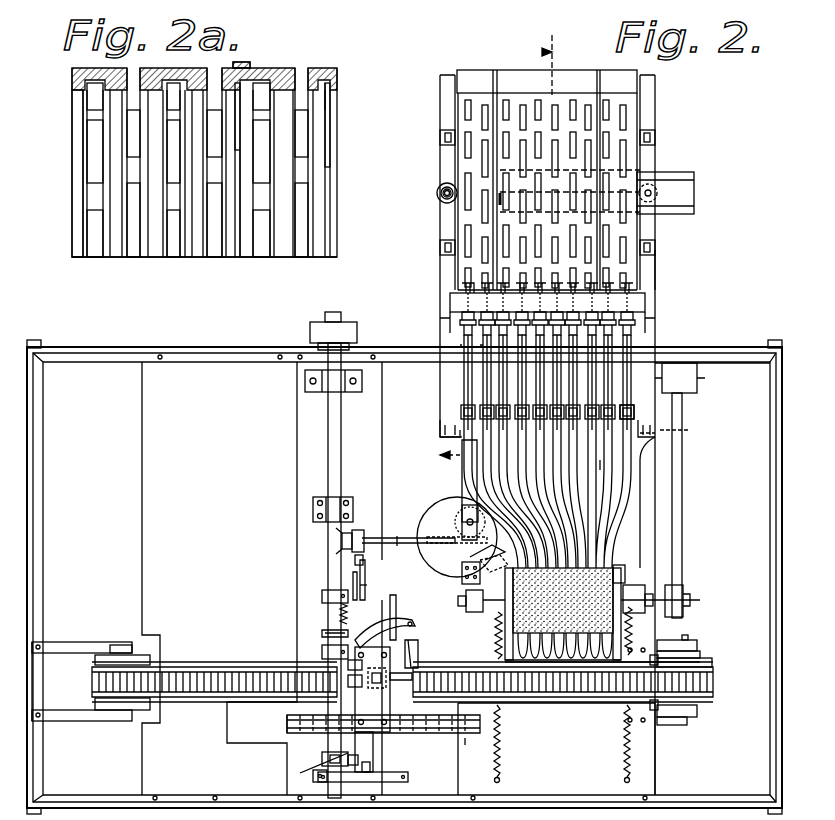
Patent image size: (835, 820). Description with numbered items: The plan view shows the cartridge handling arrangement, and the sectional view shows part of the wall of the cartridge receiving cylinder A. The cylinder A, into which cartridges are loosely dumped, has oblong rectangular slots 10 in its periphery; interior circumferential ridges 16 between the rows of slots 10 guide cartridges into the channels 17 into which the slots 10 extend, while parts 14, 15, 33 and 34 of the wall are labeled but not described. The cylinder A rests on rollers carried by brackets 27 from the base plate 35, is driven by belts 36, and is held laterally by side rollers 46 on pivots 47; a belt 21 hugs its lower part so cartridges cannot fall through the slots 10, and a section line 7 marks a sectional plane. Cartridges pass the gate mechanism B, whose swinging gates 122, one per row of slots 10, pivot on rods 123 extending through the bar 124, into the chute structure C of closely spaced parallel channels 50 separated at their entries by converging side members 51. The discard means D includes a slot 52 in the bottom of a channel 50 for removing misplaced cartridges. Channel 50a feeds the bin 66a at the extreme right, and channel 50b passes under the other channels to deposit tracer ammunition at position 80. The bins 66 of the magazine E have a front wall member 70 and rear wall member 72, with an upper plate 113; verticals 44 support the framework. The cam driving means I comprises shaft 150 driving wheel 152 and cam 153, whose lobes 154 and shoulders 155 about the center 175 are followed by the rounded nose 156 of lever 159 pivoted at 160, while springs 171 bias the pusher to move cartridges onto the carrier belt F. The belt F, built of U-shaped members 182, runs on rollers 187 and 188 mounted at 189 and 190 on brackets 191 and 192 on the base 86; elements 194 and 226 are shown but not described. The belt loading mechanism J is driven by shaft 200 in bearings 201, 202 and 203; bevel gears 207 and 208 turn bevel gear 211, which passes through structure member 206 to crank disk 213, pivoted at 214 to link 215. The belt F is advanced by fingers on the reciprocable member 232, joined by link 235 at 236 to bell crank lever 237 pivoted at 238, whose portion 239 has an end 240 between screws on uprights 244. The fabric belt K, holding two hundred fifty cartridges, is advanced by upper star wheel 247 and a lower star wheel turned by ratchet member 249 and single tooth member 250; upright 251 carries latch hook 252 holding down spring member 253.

In FIG. 2, the section line 7 is at (491, 247).
In FIG. 2, the belt 21 is at (503, 54).
In FIG. 2A, the belts 36 is at (242, 64).
In FIG. 2, the belts 36 is at (498, 97).
In FIG. 2A, the openings or slots 10 is at (92, 150).
In FIG. 2, the openings or slots 10 is at (468, 148).
In FIG. 2, the brackets 27 is at (440, 135).
In FIG. 2A, the main rotating cylinder A is at (337, 70).
In FIG. 2, the main rotating cylinder A is at (655, 158).
In FIG. 2, the side rollers 46 is at (437, 190).
In FIG. 2, the pivots 47 is at (437, 198).
In FIG. 2, the base plate 35 is at (655, 262).
In FIG. 2, the swinging gates 122 is at (450, 286).
In FIG. 2, the bar 124 is at (450, 302).
In FIG. 2, the rods 123 is at (645, 320).
In FIG. 2, the gate mechanism B is at (655, 326).
In FIG. 2, the side members 51 is at (480, 350).
In FIG. 2, the chute structure C is at (458, 368).
In FIG. 2, the channels 50 is at (478, 390).
In FIG. 2, the discharge or discard means D is at (458, 416).
In FIG. 2, the verticals 44 is at (440, 428).
In FIG. 2, the opening or slot 52 is at (633, 418).
In FIG. 2, the channel member 50b is at (605, 462).
In FIG. 2, the channel member 50a is at (640, 490).
In FIG. 2, the cam driving means I is at (448, 505).
In FIG. 2, the cam 153 is at (437, 510).
In FIG. 2, the wheel 152 is at (456, 519).
In FIG. 2, the center 175 is at (466, 523).
In FIG. 2, the lobes 154 is at (425, 538).
In FIG. 2, the shaft 150 is at (405, 551).
In FIG. 2, the pivot 160 is at (500, 545).
In FIG. 2, the shoulders 155 is at (457, 549).
In FIG. 2, the rounded nose 156 is at (462, 572).
In FIG. 2, the follower lever 159 is at (497, 568).
In FIG. 2, the upper plate 113 is at (625, 575).
In FIG. 2, the shaft 200 is at (330, 527).
In FIG. 2, the bevel gear 208 is at (344, 545).
In FIG. 2, the bearing 203 is at (322, 596).
In FIG. 2, the bevel gear 211 is at (340, 611).
In FIG. 2, the bevel gear 207 is at (322, 633).
In FIG. 2, the bearing 202 is at (322, 652).
In FIG. 2, the upright 244 is at (348, 666).
In FIG. 2, the end portion 240 is at (348, 681).
In FIG. 2, the structure member 206 is at (358, 560).
In FIG. 2, the crank disk 213 is at (371, 584).
In FIG. 2, the pivotal connection 214 is at (365, 581).
In FIG. 2, the link 215 is at (375, 591).
In FIG. 2, the belt loading mechanism J is at (385, 630).
In FIG. 2, the lever portion 239 is at (410, 596).
In FIG. 2, the pivot 238 is at (418, 650).
In FIG. 2, the bell crank lever 237 is at (412, 660).
In FIG. 2, the link 235 is at (410, 676).
In FIG. 2, the reciprocable member 232 is at (372, 689).
In FIG. 2, the connection 236 is at (420, 706).
In FIG. 2, the rear wall member 72 is at (495, 616).
In FIG. 2, the magazine or bin structure E is at (505, 633).
In FIG. 2, the front wall member 70 is at (495, 650).
In FIG. 2, the bin 66a is at (610, 645).
In FIG. 2, the supporting bracket 191 is at (690, 640).
In FIG. 2, the roller mounting 189 is at (700, 654).
In FIG. 2, the roller 187 is at (712, 662).
In FIG. 2, the carrier belt F is at (713, 682).
In FIG. 2, the bin structure 66 is at (527, 650).
In FIG. 2, the position 80 is at (552, 652).
In FIG. 2, the bracket K is at (473, 749).
In FIG. 2, the springs 171 is at (500, 753).
In FIG. 2, the base 86 is at (655, 770).
In FIG. 2, the supporting bracket 192 is at (85, 653).
In FIG. 2, the roller mounting 190 is at (120, 642).
In FIG. 2, the roller 188 is at (150, 660).
In FIG. 2, the U-shaped members 182 is at (220, 667).
In FIG. 2, the bar 194 is at (32, 677).
In FIG. 2, the rack 226 is at (287, 724).
In FIG. 2, the upper star wheel 247 is at (315, 757).
In FIG. 2, the single tooth member 250 is at (322, 759).
In FIG. 2, the bearing 201 is at (313, 778).
In FIG. 2, the spring member 253 is at (373, 748).
In FIG. 2, the ratchet member 249 is at (358, 760).
In FIG. 2, the latch hook 252 is at (370, 767).
In FIG. 2, the upright 251 is at (425, 777).
In FIG. 2A, the strip 15 is at (306, 107).
In FIG. 2A, the spacer 33 is at (240, 114).
In FIG. 2A, the strip 14 is at (308, 157).
In FIG. 2A, the interior circumferential ridges 16 is at (118, 172).
In FIG. 2A, the strip 34 is at (240, 197).
In FIG. 2A, the channels 17 is at (84, 252).